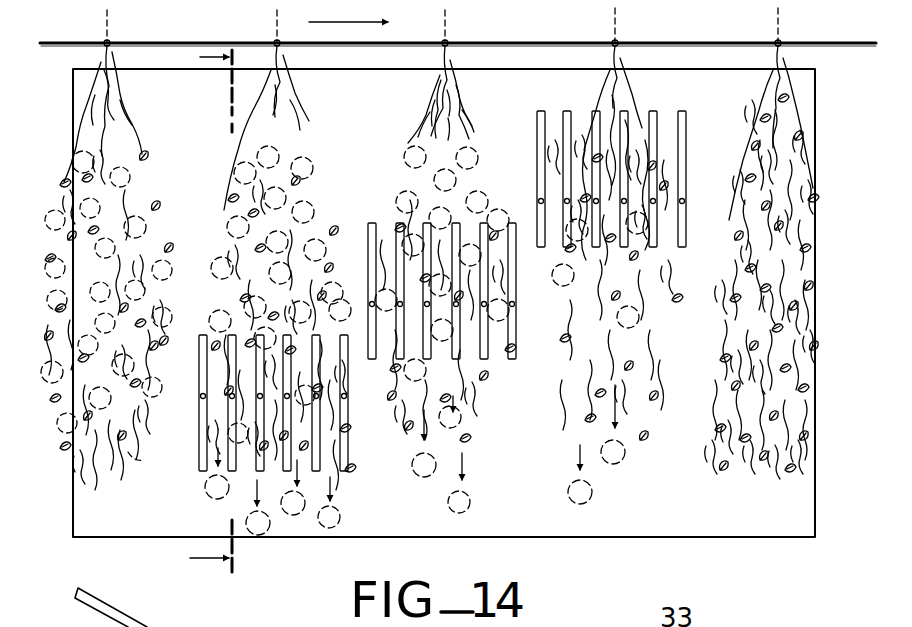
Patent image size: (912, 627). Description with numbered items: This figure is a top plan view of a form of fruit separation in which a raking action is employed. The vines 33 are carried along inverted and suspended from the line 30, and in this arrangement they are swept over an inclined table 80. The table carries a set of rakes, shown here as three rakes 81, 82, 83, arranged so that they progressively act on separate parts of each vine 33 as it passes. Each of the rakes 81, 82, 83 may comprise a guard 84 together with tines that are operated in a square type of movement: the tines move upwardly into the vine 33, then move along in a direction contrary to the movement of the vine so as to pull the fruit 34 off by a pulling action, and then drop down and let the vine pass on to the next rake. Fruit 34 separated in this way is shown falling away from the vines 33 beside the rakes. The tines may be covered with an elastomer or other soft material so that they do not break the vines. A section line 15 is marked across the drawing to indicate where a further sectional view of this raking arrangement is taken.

The section line 15- 15 is at (213, 306).
The line 30 is at (523, 41).
The vines 33 is at (138, 150).
The fruit 34 is at (339, 516).
The inclined table 80 is at (113, 527).
The rake 81 is at (198, 464).
The rake 82 is at (380, 216).
The rake 83 is at (555, 125).
The guard 84 is at (652, 128).